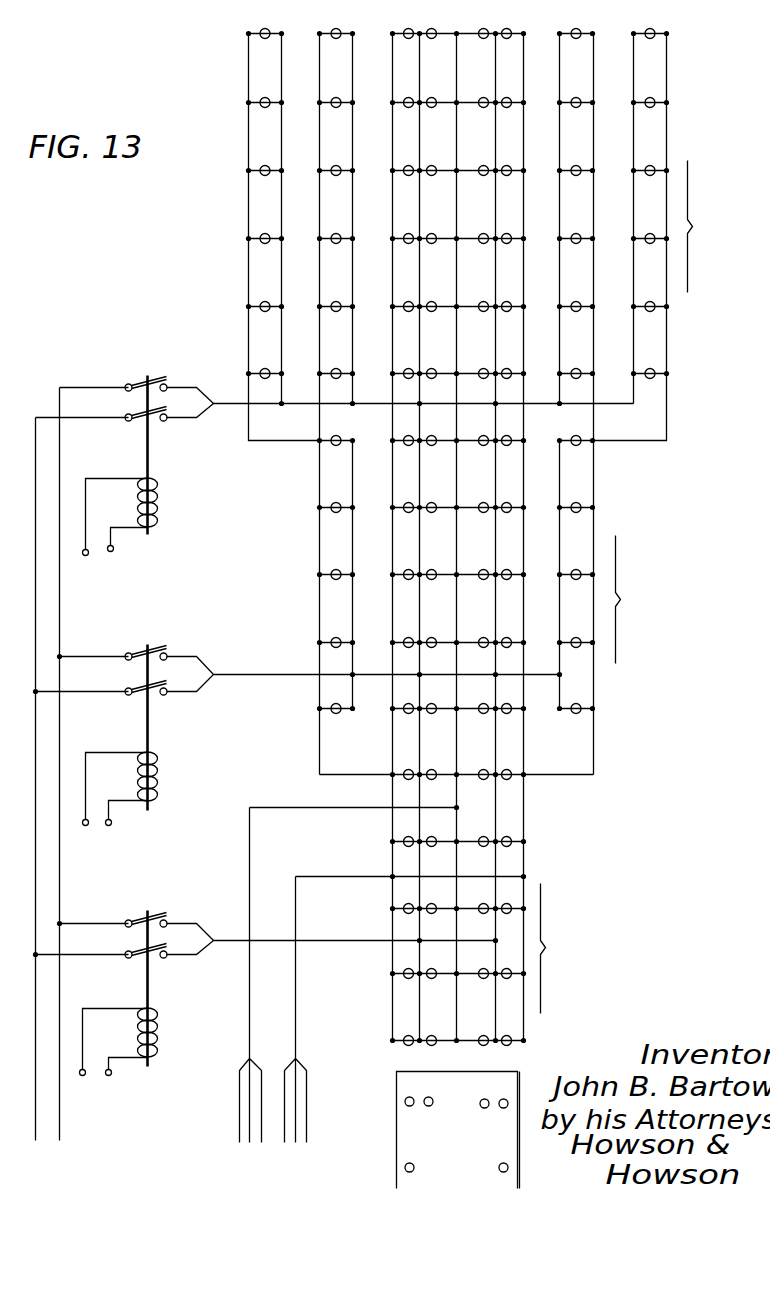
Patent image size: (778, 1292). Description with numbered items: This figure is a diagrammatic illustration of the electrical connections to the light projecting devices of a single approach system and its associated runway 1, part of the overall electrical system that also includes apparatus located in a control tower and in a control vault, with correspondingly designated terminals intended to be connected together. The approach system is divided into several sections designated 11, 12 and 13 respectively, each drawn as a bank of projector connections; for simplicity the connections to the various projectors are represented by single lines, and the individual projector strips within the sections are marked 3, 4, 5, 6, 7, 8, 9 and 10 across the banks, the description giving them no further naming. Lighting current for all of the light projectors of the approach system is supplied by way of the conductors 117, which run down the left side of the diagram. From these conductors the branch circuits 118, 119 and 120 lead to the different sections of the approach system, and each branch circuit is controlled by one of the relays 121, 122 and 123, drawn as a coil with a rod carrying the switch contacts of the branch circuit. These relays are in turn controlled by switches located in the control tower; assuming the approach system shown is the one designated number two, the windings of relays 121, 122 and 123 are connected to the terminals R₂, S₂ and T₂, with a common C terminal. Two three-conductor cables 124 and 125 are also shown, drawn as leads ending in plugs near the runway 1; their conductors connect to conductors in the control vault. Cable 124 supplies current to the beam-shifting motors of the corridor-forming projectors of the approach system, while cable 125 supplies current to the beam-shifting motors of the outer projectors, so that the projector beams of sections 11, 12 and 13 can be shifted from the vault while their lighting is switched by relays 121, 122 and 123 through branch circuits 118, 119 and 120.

The runway 1 is at (478, 1151).
The contact strip 3 is at (431, 32).
The contact strip 4 is at (483, 39).
The contact strip 5 is at (405, 30).
The contact strip 6 is at (509, 32).
The contact strip 7 is at (333, 30).
The contact strip 8 is at (581, 32).
The contact strip 9 is at (262, 30).
The contact strip 10 is at (655, 32).
The section of the approach system 11 is at (562, 949).
The section of the approach system 12 is at (637, 600).
The section of the approach system 13 is at (708, 227).
The conductors 117 is at (48, 1097).
The branch circuit 118 is at (84, 938).
The branch circuit 119 is at (84, 672).
The branch circuit 120 is at (78, 400).
The relay 121 is at (149, 986).
The relay 122 is at (149, 722).
The relay 123 is at (149, 448).
The three-conductor cable 124 is at (243, 1113).
The three-conductor cable 125 is at (303, 1113).